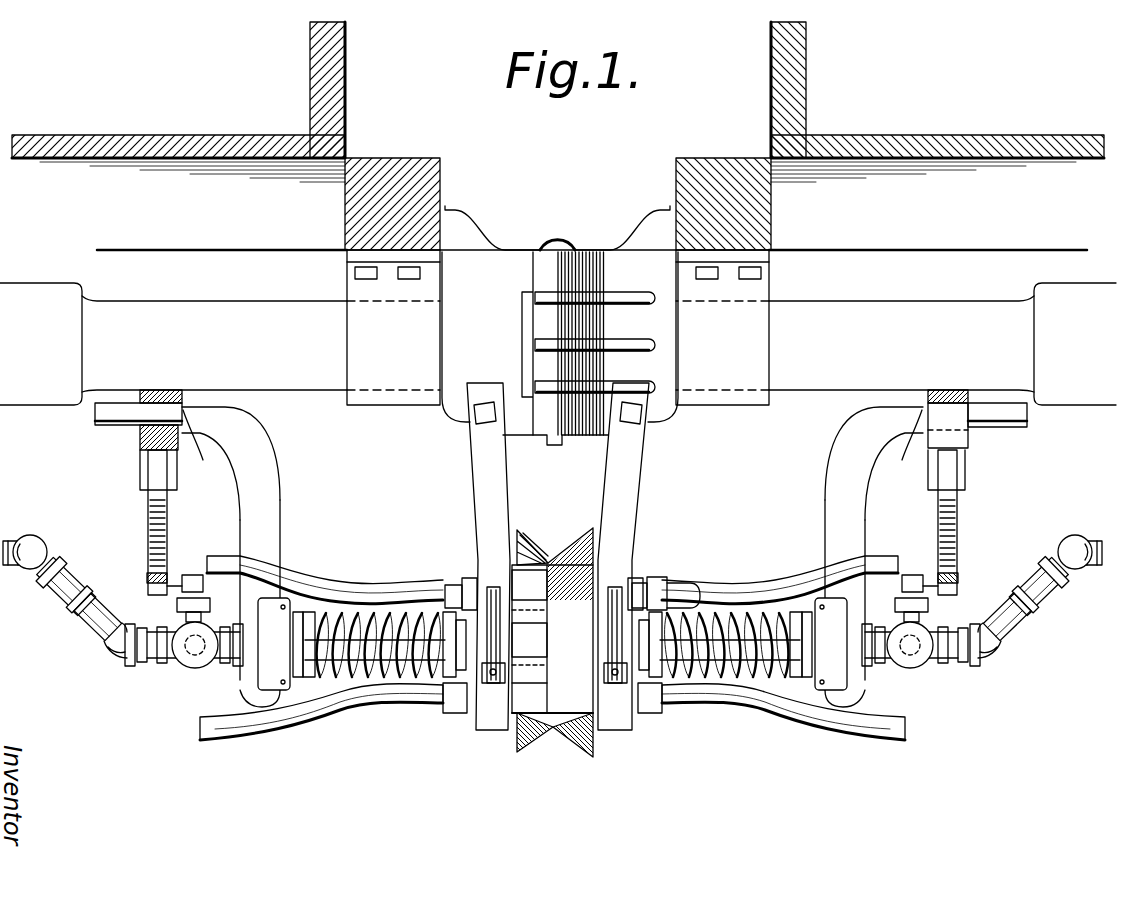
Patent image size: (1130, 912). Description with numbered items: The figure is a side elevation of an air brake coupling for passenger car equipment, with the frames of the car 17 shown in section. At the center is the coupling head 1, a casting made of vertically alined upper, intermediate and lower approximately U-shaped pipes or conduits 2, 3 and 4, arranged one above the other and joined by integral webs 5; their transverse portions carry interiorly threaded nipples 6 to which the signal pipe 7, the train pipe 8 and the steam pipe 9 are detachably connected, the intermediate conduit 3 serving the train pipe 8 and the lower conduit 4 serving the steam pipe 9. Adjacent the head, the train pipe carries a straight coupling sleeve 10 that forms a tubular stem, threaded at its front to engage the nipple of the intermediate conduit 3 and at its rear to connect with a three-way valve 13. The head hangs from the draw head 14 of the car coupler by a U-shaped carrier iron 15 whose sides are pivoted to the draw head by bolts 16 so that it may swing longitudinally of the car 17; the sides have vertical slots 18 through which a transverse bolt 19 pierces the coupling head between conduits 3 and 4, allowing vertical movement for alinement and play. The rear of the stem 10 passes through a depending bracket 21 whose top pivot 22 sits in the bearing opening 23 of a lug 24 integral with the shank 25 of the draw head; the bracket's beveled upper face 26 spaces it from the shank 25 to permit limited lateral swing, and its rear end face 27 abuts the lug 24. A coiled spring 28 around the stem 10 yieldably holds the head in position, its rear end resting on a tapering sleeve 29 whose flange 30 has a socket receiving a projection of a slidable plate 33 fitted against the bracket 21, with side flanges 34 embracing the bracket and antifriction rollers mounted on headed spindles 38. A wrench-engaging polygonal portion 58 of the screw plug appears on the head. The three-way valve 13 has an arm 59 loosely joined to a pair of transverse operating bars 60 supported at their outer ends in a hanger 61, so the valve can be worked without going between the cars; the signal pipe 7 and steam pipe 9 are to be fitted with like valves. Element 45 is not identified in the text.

The coupling head 1 is at (567, 560).
The upper pipe or conduit 2 is at (655, 553).
The intermediate pipe or conduit 3 is at (678, 568).
The lower pipe or conduit 4 is at (640, 715).
The integral webs 5 is at (548, 640).
The tubular extensions or nipples 6 is at (447, 622).
The signal pipe 7 is at (316, 582).
The train pipe 8 is at (65, 583).
The steam pipe 9 is at (305, 728).
The coupling sleeve 10 is at (392, 682).
The three-way valve 13 is at (190, 658).
The draw head 14 is at (573, 248).
The carrier iron 15 is at (622, 480).
The bolts 16 is at (480, 414).
The car 17 is at (558, 136).
The vertical slots 18 is at (558, 621).
The transverse bolt 19 is at (493, 676).
The bracket 21 is at (242, 530).
The pivot 22 is at (108, 427).
The bearing opening 23 is at (160, 390).
The lug 24 is at (140, 436).
The shank 25 is at (558, 327).
The upper end or face of the bracket 26 is at (210, 410).
The rear end face 27 is at (200, 462).
The coiled spring 28 is at (376, 625).
The tapering sleeve 29 is at (348, 610).
The flange 30 is at (306, 680).
The slidable plate or member 33 is at (306, 576).
The side flanges 34 is at (262, 700).
The pivots or spindles 38 is at (282, 678).
The wedge face 45 is at (525, 540).
The polygonal portion 58 is at (455, 585).
The arm 59 is at (180, 588).
The operating bars 60 is at (148, 512).
The hanger 61 is at (172, 490).